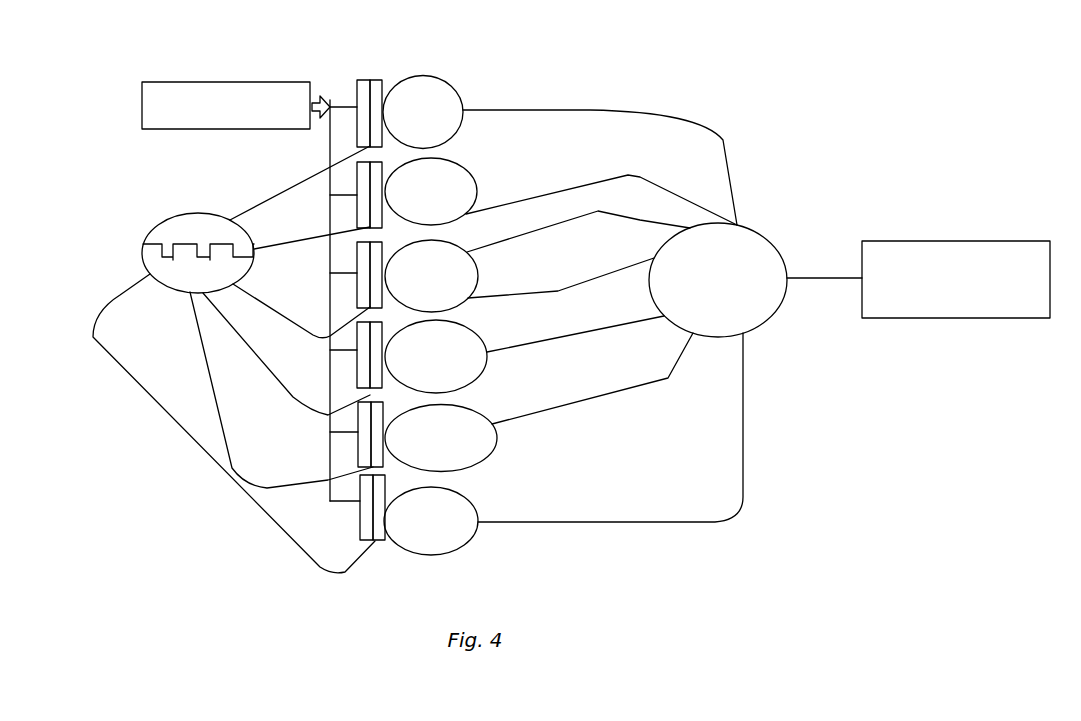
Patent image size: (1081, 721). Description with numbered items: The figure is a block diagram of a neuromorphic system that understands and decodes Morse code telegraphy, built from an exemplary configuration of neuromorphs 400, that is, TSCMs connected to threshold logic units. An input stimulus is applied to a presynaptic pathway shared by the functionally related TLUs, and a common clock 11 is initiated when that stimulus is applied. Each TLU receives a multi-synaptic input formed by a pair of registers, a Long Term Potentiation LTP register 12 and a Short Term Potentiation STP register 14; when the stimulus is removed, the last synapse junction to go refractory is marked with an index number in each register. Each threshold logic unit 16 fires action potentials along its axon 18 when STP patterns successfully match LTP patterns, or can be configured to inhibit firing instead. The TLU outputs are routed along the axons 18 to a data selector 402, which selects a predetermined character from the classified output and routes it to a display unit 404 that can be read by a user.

The neuromorphs 400 is at (338, 74).
The common clock 11 is at (178, 213).
The Long Term Potentiation LTP register 12 is at (357, 80).
The Short Term Potentiation STP register 14 is at (382, 80).
The threshold logic unit 16 is at (462, 94).
The axon 18 is at (585, 104).
The data selector 402 is at (763, 236).
The display unit 404 is at (890, 241).